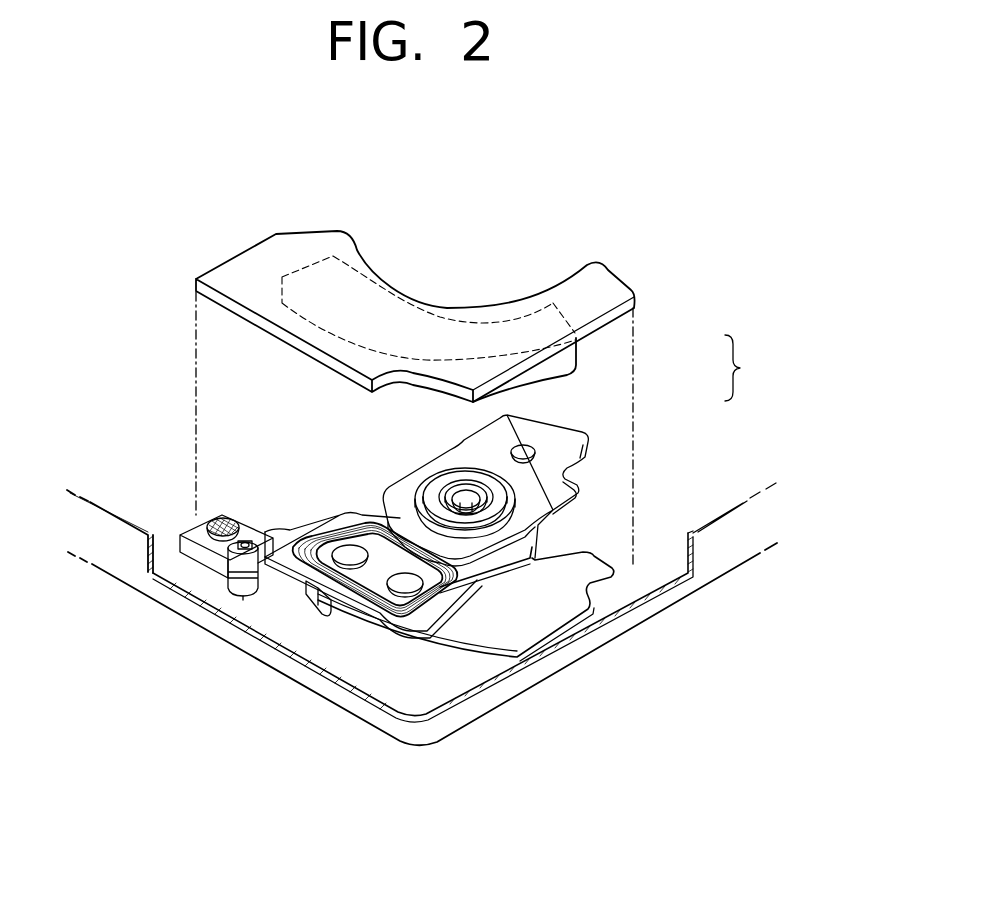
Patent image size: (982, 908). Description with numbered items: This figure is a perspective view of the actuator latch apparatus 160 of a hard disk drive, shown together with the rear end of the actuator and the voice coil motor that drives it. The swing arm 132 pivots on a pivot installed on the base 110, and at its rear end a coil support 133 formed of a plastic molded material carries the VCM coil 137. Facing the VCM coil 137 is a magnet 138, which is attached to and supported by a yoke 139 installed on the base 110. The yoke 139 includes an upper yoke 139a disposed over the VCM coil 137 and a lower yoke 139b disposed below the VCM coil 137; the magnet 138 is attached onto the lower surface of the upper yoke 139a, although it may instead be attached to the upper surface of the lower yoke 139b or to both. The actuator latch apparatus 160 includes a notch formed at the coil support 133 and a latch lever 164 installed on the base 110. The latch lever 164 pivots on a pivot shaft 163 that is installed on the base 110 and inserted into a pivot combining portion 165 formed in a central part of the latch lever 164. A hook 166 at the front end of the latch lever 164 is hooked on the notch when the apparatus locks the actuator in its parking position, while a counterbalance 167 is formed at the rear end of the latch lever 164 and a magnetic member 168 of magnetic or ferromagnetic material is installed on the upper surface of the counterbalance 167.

The base 110 is at (718, 567).
The swing arm 132 is at (470, 440).
The coil support 133 is at (410, 618).
The VCM coil 137 is at (341, 533).
The magnet 138 is at (563, 363).
The yoke 139 is at (752, 368).
The upper yoke 139a is at (613, 302).
The lower yoke 139b is at (593, 567).
The actuator latch apparatus 160 is at (211, 607).
The pivot shaft 163 is at (244, 542).
The latch lever 164 is at (242, 597).
The pivot combining portion 165 is at (227, 562).
The hook 166 is at (323, 603).
The counterbalance 167 is at (202, 557).
The magnetic member 168 is at (217, 512).